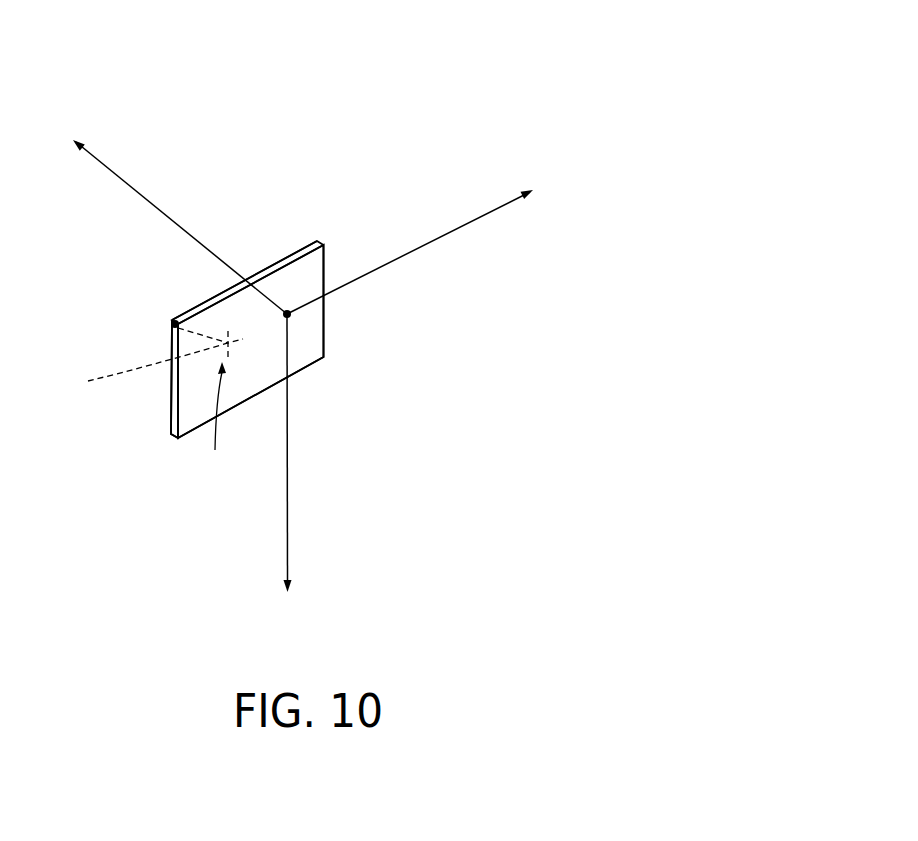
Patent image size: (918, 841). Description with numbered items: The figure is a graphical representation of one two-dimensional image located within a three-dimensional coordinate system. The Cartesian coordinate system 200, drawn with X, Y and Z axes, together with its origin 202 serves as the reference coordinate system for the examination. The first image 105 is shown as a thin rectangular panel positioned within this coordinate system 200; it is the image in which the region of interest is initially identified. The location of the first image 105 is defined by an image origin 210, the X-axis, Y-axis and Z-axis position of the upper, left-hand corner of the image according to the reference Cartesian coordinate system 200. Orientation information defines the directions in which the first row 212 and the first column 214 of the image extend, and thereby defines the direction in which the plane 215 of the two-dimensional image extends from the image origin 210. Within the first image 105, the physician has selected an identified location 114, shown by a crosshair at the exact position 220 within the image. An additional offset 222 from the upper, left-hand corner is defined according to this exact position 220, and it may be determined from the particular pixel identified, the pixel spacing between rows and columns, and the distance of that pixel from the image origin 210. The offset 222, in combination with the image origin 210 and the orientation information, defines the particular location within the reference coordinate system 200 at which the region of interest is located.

The Cartesian coordinate system 200 is at (309, 316).
The origin 202 is at (290, 317).
The first image 105 is at (288, 256).
The first row 212 is at (261, 272).
The first column 214 is at (172, 419).
The plane 215 is at (312, 373).
The image origin 210 is at (174, 321).
The offset 222 is at (140, 366).
The exact position 220 is at (233, 348).
The identified location 114 is at (212, 422).